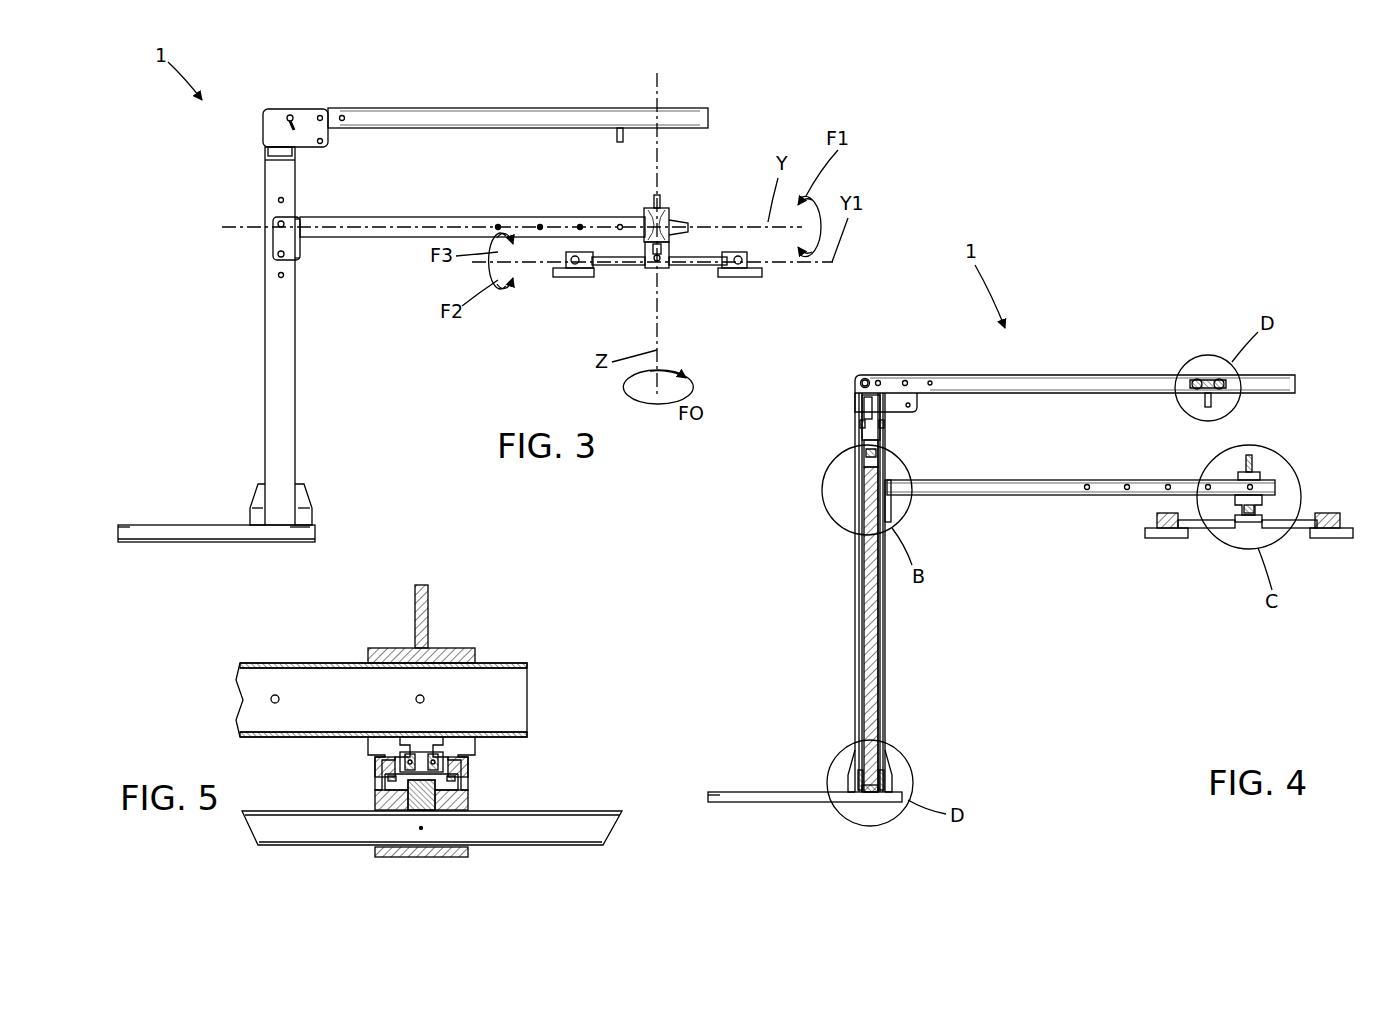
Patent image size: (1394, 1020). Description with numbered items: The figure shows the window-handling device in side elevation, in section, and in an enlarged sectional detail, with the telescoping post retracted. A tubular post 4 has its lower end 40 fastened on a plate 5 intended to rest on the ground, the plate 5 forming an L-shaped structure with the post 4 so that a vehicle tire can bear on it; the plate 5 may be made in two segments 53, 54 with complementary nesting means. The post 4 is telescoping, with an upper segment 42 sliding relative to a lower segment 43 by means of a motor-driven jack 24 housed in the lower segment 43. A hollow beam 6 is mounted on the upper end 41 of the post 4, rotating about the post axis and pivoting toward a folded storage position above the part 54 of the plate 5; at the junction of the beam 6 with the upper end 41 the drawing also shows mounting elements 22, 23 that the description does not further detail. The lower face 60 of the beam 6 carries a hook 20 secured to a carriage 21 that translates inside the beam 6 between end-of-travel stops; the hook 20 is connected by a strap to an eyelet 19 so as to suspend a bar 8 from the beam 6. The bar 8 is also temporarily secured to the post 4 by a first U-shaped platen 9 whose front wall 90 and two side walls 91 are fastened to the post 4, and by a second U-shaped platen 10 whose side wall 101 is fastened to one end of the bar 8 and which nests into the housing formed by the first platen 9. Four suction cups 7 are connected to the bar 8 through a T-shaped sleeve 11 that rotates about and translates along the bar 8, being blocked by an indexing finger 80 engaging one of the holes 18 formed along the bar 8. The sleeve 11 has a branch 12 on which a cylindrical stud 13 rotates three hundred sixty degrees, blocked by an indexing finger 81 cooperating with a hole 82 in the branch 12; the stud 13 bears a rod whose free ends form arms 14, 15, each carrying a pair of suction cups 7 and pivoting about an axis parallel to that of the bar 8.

In FIG. 3, the tubular post 4 is at (302, 368).
In FIG. 4, the tubular post 4 is at (888, 608).
In FIG. 3, the plate 5 is at (216, 542).
In FIG. 4, the plate 5 is at (796, 802).
In FIG. 3, the beam 6 is at (584, 108).
In FIG. 4, the beam 6 is at (1110, 375).
In FIG. 3, the suction cups 7 is at (572, 277).
In FIG. 4, the suction cups 7 is at (1160, 538).
In FIG. 3, the bar 8 is at (416, 217).
In FIG. 4, the bar 8 is at (1036, 495).
In FIG. 5, the bar 8 is at (507, 663).
In FIG. 3, the first U-shaped platen 9 is at (300, 244).
In FIG. 4, the first U-shaped platen 9 is at (893, 512).
In FIG. 4, the second U-shaped platen 10 is at (893, 482).
In FIG. 3, the T-shaped sleeve 11 is at (669, 216).
In FIG. 4, the T-shaped sleeve 11 is at (1238, 476).
In FIG. 5, the T-shaped sleeve 11 is at (390, 650).
In FIG. 3, the branch 12 is at (688, 236).
In FIG. 4, the branch 12 is at (1262, 493).
In FIG. 5, the branch 12 is at (455, 758).
In FIG. 3, the cylindrical stud 13 is at (666, 252).
In FIG. 4, the cylindrical stud 13 is at (1262, 512).
In FIG. 5, the cylindrical stud 13 is at (458, 803).
In FIG. 3, the arm 14 is at (618, 266).
In FIG. 4, the arm 14 is at (1217, 528).
In FIG. 3, the arm 15 is at (705, 266).
In FIG. 4, the arm 15 is at (1282, 528).
In FIG. 3, the holes 18 is at (578, 218).
In FIG. 4, the holes 18 is at (1126, 478).
In FIG. 5, the holes 18 is at (270, 699).
In FIG. 3, the eyelet 19 is at (660, 200).
In FIG. 4, the eyelet 19 is at (1252, 458).
In FIG. 5, the eyelet 19 is at (425, 604).
In FIG. 3, the hook 20 is at (622, 142).
In FIG. 4, the hook 20 is at (1205, 402).
In FIG. 4, the carriage 21 is at (1210, 378).
In FIG. 3, the bracket 22 is at (291, 116).
In FIG. 4, the fastener 23 is at (866, 378).
In FIG. 4, the jack 24 is at (864, 625).
In FIG. 3, the lower end 40 is at (300, 500).
In FIG. 4, the lower end 40 is at (884, 775).
In FIG. 3, the upper end 41 is at (266, 150).
In FIG. 4, the upper end 41 is at (855, 403).
In FIG. 4, the upper segment 42 is at (868, 438).
In FIG. 4, the lower segment 43 is at (886, 640).
In FIG. 3, the segment 53 is at (280, 542).
In FIG. 4, the segment 53 is at (864, 802).
In FIG. 3, the part 54 is at (148, 542).
In FIG. 4, the part 54 is at (730, 802).
In FIG. 3, the lower face 60 is at (490, 128).
In FIG. 4, the lower face 60 is at (1044, 393).
In FIG. 5, the indexing finger 80 is at (470, 700).
In FIG. 5, the indexing finger 81 is at (385, 780).
In FIG. 5, the hole 82 is at (400, 770).
In FIG. 3, the front wall 90 is at (300, 260).
In FIG. 3, the side walls 91 is at (296, 222).
In FIG. 4, the side wall 101 is at (893, 492).